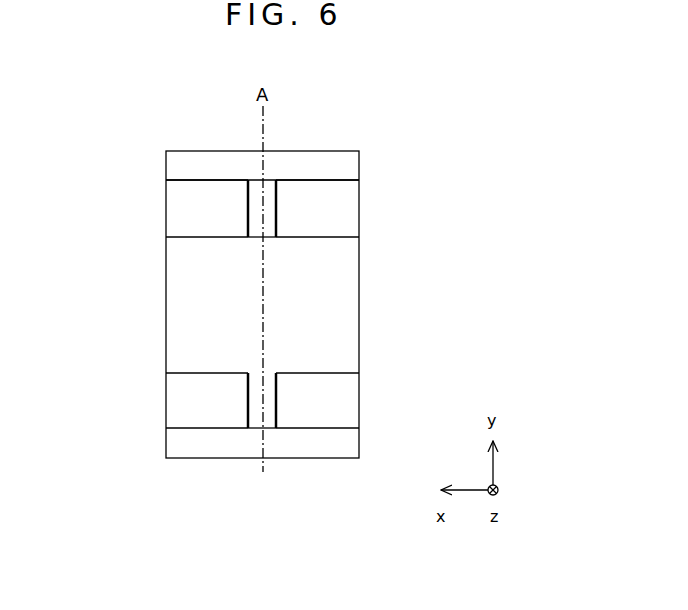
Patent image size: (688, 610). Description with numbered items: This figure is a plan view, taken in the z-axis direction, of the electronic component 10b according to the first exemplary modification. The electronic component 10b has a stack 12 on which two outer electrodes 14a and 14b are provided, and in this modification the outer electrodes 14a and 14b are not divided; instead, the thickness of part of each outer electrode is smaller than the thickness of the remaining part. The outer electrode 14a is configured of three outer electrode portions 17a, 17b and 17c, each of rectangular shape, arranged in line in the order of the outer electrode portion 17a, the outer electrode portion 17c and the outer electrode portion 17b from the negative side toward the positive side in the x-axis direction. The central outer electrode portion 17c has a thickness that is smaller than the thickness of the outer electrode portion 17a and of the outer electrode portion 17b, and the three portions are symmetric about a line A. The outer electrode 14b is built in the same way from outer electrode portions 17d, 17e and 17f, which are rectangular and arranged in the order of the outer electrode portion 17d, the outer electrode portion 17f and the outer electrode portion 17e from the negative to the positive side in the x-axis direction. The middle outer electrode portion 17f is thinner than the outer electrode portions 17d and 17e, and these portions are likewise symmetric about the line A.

The electronic component 10b is at (146, 84).
The stack 12 is at (289, 150).
The outer electrode 14a is at (342, 277).
The outer electrode 14b is at (342, 507).
The outer electrode portion 17a is at (315, 222).
The outer electrode portion 17b is at (214, 222).
The outer electrode portion 17c is at (258, 222).
The outer electrode portion 17d is at (315, 420).
The outer electrode portion 17e is at (215, 420).
The outer electrode portion 17f is at (258, 420).